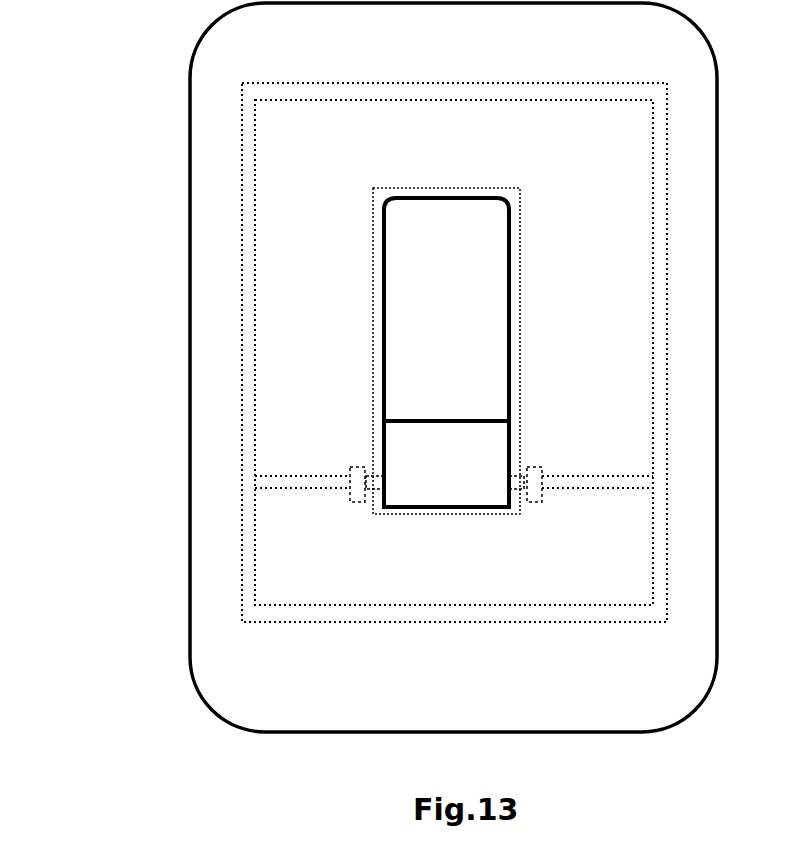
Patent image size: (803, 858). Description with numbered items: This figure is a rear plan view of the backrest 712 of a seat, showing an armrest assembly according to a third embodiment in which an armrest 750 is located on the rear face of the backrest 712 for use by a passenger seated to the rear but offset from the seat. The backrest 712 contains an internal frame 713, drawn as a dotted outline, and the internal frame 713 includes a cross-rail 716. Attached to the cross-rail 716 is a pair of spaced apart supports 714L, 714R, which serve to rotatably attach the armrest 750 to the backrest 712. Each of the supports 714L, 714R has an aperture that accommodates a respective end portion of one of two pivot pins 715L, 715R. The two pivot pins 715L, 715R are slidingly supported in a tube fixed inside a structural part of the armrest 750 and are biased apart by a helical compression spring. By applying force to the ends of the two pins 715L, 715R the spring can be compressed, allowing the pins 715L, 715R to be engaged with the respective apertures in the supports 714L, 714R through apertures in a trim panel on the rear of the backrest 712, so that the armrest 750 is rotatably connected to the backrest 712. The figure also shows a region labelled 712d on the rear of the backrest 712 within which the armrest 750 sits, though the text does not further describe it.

The backrest 712 is at (190, 197).
The housing recess 712d is at (385, 191).
The internal frame 713 is at (242, 289).
The armrest 750 is at (383, 320).
The cross-rail 716 is at (285, 473).
The left hand support 714L is at (350, 463).
The right hand support 714R is at (540, 463).
The left pivot pin 715L is at (377, 490).
The right pivot pin 715R is at (513, 490).